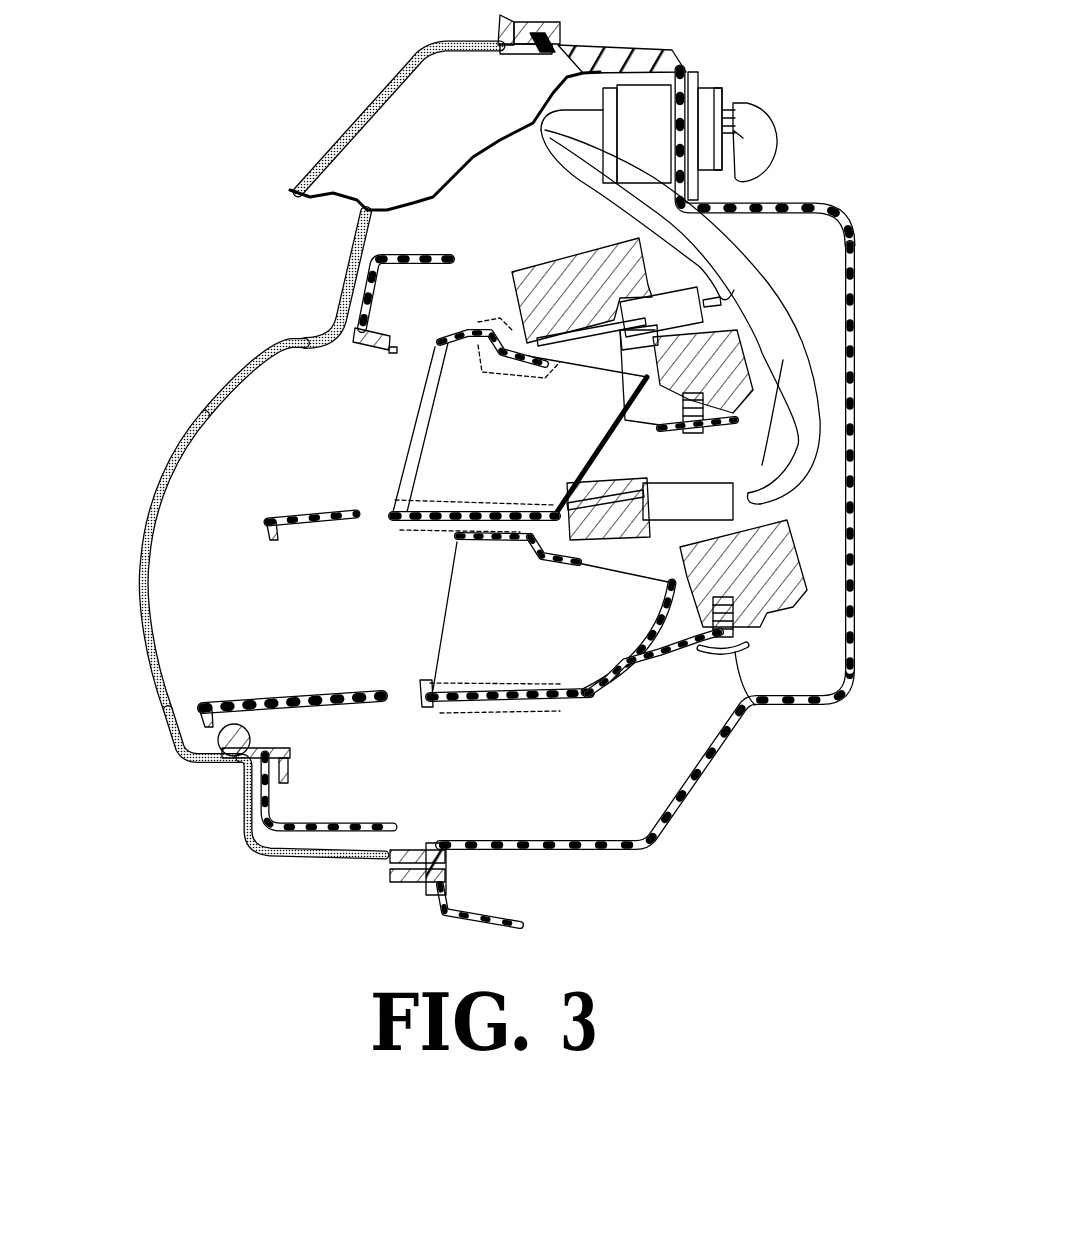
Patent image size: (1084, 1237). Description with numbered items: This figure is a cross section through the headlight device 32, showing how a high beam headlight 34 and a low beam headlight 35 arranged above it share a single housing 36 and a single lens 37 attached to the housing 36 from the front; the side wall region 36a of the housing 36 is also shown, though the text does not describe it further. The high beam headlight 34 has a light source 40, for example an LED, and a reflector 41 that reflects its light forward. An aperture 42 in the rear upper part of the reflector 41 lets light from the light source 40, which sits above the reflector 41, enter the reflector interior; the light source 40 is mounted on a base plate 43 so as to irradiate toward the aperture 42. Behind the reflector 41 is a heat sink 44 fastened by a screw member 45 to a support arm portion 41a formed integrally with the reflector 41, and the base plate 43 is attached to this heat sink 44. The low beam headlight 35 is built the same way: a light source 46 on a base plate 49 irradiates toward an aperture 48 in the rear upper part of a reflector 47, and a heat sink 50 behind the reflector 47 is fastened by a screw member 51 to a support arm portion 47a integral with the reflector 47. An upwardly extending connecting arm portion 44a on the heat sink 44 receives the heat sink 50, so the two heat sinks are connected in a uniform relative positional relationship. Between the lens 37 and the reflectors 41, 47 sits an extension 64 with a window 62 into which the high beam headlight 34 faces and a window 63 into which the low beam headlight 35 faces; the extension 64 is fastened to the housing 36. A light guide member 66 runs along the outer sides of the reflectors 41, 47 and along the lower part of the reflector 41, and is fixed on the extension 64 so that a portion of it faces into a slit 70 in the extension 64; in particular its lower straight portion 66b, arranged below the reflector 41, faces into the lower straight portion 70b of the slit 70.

The headlight device 32 is at (316, 165).
The high beam headlight 34 is at (148, 700).
The low beam headlight 35 is at (224, 386).
The housing 36 is at (790, 200).
The case side wall 36a is at (855, 343).
The lens 37 is at (150, 500).
The light source for the high beam headlight 40 is at (600, 562).
The reflector for the high beam headlight 41 is at (493, 710).
The support arm portion 41a is at (650, 672).
The aperture 42 is at (578, 568).
The base plate for the high beam headlight 43 is at (633, 540).
The heat sink for the high beam headlight 44 is at (800, 563).
The connecting arm portion 44a is at (676, 437).
The screw member 45 is at (757, 707).
The light source for the low beam headlight 46 is at (560, 350).
The reflector for the low beam headlight 47 is at (448, 498).
The support arm portion 47a is at (668, 440).
The aperture 48 is at (548, 378).
The base plate for the low beam headlight 49 is at (592, 332).
The heat sink for the low beam headlight 50 is at (735, 370).
The screw member 51 is at (767, 460).
The window for the high beam headlight 62 is at (230, 702).
The window for the low beam headlight 63 is at (388, 352).
The extension 64 is at (420, 254).
The light guide member 66 is at (290, 770).
The lower straight portion 66b is at (238, 768).
The slit 70 is at (208, 745).
The lower straight portion 70b is at (268, 755).